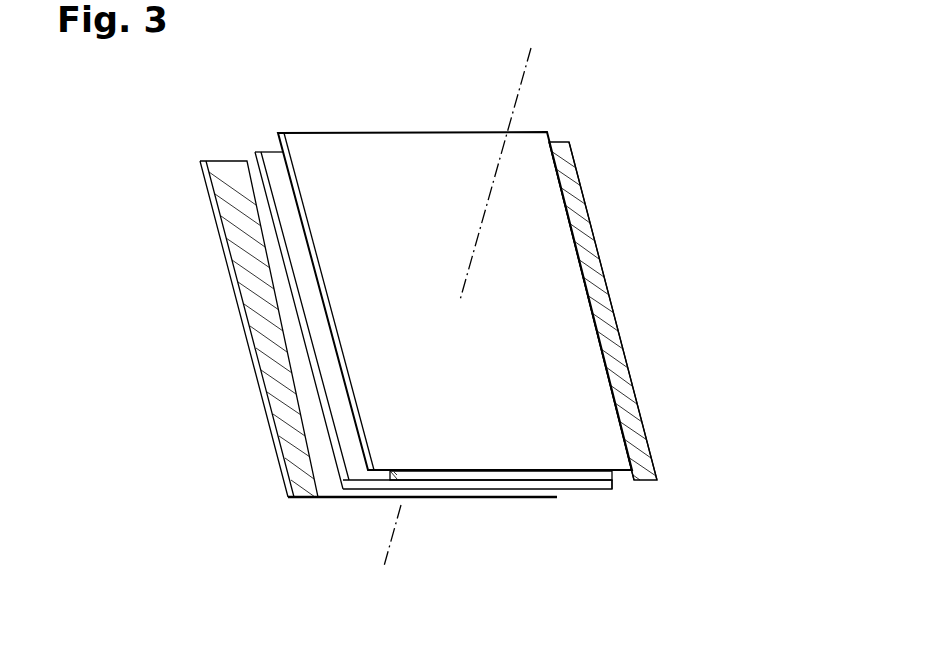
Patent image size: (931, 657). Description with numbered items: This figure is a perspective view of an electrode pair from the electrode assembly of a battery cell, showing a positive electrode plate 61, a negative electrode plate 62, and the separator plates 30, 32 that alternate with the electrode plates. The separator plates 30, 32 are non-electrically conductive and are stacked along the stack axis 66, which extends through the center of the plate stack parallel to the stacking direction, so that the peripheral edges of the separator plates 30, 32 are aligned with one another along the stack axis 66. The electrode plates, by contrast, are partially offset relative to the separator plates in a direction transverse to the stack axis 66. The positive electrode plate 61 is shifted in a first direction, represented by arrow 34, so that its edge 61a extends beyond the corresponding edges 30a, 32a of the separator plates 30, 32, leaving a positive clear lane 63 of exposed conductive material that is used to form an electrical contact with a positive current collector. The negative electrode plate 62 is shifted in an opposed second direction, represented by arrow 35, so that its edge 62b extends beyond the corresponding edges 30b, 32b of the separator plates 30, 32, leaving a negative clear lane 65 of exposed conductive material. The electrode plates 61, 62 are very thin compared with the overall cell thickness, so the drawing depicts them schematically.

The separator plate 30 is at (355, 458).
The edge of separator plate 30a is at (326, 418).
The edge of separator plate 30b is at (612, 486).
The separator plate 32 is at (533, 189).
The edge of separator plate 32a is at (345, 372).
The edge of separator plate 32b is at (580, 232).
The arrow 34 is at (93, 131).
The arrow 35 is at (808, 131).
The positive electrode plate 61 is at (463, 497).
The edge of positive electrode plate 61a is at (247, 325).
The negative electrode plate 62 is at (390, 477).
The edge of negative electrode plate 62b is at (630, 375).
The positive clear lane 63 is at (248, 272).
The negative clear lane 65 is at (607, 318).
The stack axis 66 is at (517, 87).